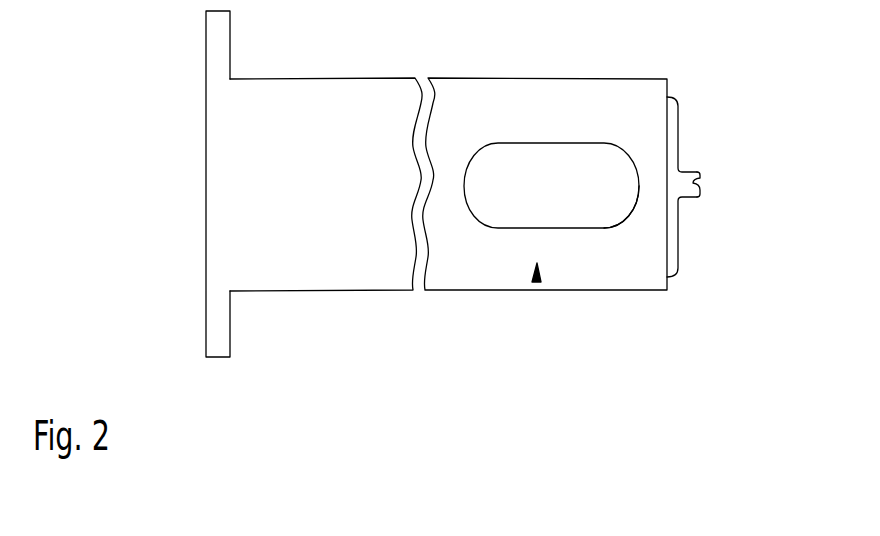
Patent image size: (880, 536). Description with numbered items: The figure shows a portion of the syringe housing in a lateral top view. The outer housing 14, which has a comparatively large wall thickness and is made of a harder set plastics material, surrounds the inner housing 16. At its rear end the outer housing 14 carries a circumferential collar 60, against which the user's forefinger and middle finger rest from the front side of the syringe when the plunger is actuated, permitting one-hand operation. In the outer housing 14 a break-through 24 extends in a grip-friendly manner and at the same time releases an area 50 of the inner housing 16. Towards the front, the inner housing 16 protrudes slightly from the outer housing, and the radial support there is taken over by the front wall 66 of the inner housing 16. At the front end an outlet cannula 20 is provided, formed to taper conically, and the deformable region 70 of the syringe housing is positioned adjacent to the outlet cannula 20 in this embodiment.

The outer housing 14 is at (321, 270).
The inner housing 16 is at (672, 253).
The outlet cannula 20 is at (685, 186).
The break-through 24 is at (613, 192).
The area 50 is at (537, 196).
The collar 60 is at (216, 344).
The front wall 66 is at (672, 119).
The deformable region 70 is at (536, 282).